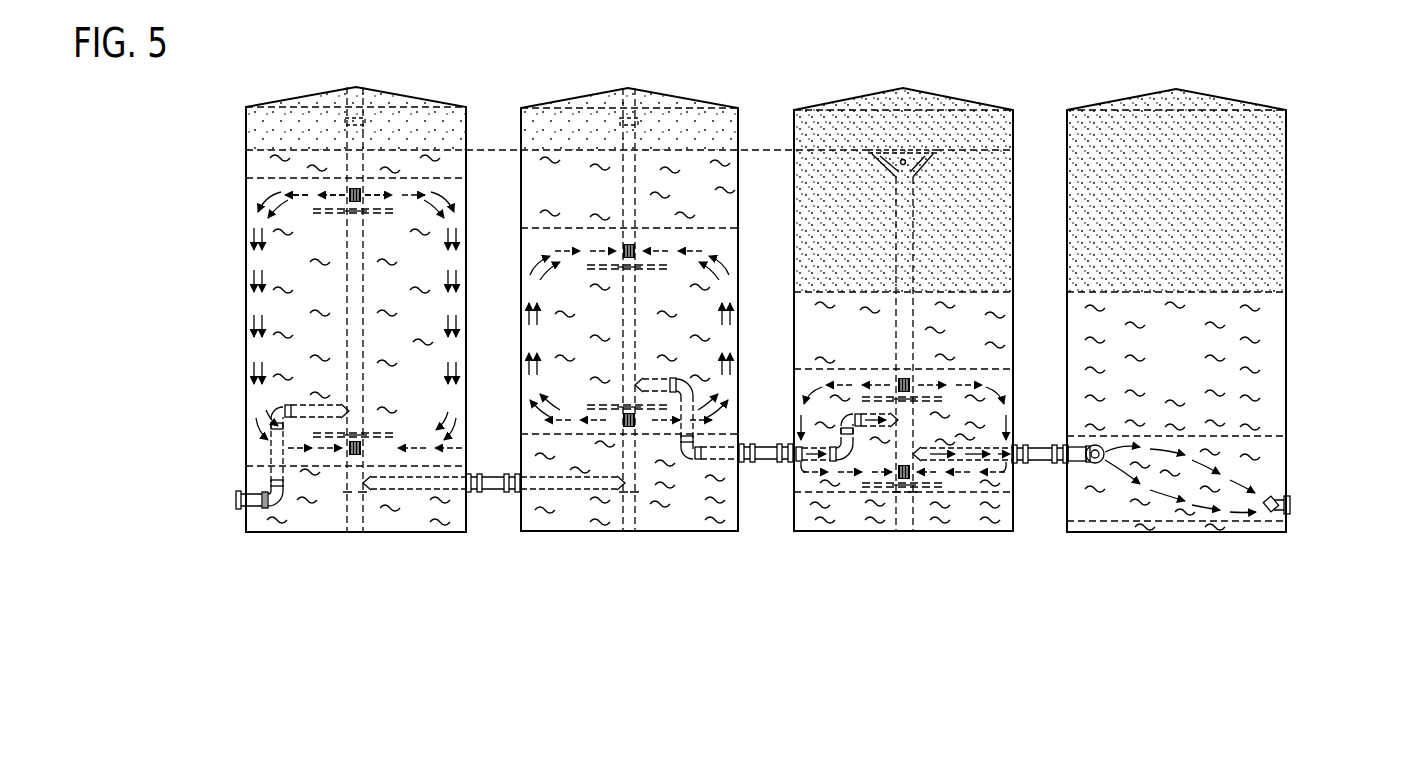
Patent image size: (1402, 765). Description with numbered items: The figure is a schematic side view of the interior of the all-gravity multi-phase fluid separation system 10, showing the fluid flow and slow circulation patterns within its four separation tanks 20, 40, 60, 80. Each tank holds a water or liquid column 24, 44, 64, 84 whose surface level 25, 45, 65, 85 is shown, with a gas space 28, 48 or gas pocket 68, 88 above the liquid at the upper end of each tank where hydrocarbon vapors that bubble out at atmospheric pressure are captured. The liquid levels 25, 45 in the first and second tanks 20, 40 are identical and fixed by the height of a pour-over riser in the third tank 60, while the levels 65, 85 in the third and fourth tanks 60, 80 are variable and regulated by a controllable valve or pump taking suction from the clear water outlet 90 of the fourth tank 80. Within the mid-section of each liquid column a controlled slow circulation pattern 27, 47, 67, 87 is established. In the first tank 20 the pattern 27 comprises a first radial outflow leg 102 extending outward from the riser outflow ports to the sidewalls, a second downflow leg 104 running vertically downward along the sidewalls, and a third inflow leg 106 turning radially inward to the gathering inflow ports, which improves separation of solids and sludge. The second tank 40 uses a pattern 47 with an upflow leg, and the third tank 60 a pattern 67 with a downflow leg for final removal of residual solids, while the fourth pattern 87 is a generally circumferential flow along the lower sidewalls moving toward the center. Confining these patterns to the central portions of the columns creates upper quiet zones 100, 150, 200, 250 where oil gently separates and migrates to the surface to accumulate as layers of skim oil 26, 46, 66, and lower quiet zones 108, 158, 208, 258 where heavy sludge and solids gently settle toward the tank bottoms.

The all-gravity multi-phase fluid separation system 10 is at (1312, 56).
The first separation tank 20 is at (378, 84).
The liquid column of first tank 24 is at (317, 508).
The surface level of first tank liquid column 25 is at (432, 150).
The layer of skim oil 26 is at (280, 146).
The first fluid circulation pattern 27 is at (224, 287).
The gas space of first tank 28 is at (325, 118).
The second separation tank 40 is at (655, 84).
The liquid column of second tank 44 is at (575, 508).
The surface level of second tank liquid column 45 is at (705, 150).
The layer of skim oil 46 is at (552, 146).
The second fluid circulation pattern 47 is at (728, 250).
The gas space of second tank 48 is at (600, 125).
The third separation tank 60 is at (959, 92).
The liquid column of third tank 64 is at (852, 508).
The surface level of third tank liquid column 65 is at (968, 292).
The layer of skim oil 66 is at (823, 288).
The third fluid circulation pattern 67 is at (996, 380).
The gas pocket of third tank 68 is at (870, 125).
The fourth separation tank 80 is at (1226, 89).
The liquid column of fourth tank 84 is at (1257, 407).
The surface level of fourth tank liquid column 85 is at (1260, 292).
The fourth fluid circulation pattern 87 is at (1110, 508).
The gas pocket of fourth tank 88 is at (1122, 122).
The clear water outlet 90 is at (1306, 505).
The upper quiet zone of first tank 100 is at (262, 165).
The first radial outflow leg 102 is at (453, 193).
The second downflow leg 104 is at (260, 333).
The third inflow leg 106 is at (418, 446).
The lower quiet zone of first tank 108 is at (415, 508).
The upper quiet zone of second tank 150 is at (595, 201).
The lower quiet zone of second tank 158 is at (695, 508).
The upper quiet zone of third tank 200 is at (870, 348).
The lower quiet zone of third tank 208 is at (970, 508).
The upper quiet zone of fourth tank 250 is at (1202, 387).
The lower quiet zone of fourth tank 258 is at (1192, 528).